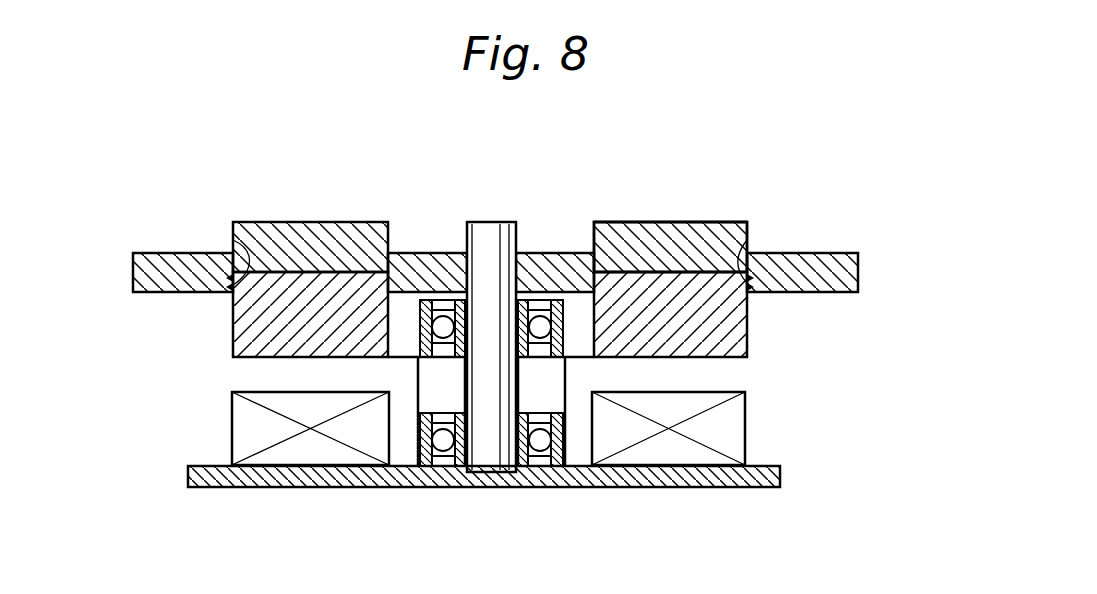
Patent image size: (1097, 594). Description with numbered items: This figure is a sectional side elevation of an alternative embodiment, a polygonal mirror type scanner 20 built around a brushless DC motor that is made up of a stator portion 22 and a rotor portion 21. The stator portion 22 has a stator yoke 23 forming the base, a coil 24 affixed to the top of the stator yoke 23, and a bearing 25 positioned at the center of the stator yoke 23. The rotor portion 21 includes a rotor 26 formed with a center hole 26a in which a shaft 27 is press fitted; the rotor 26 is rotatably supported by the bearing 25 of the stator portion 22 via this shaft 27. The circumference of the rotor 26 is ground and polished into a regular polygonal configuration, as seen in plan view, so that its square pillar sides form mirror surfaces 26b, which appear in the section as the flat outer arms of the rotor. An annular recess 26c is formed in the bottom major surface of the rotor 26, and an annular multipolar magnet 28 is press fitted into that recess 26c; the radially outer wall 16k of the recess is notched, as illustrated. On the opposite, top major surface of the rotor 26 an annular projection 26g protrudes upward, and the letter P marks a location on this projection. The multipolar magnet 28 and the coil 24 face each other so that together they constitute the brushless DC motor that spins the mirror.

The polygonal mirror type scanner 20 is at (826, 155).
The rotor portion 21 is at (618, 207).
The stator portion 22 is at (636, 492).
The stator yoke 23 is at (383, 490).
The coil 24 is at (232, 428).
The bearing 25 is at (553, 490).
The rotor 26 is at (713, 220).
The center hole 26a is at (465, 280).
The mirror surfaces 26b is at (130, 270).
The annular recess 26c is at (290, 272).
The annular projection 26g is at (333, 222).
The shaft 27 is at (507, 222).
The multipolar magnet 28 is at (258, 360).
The radially outer wall 16k is at (233, 240).
The pressing point P is at (300, 207).